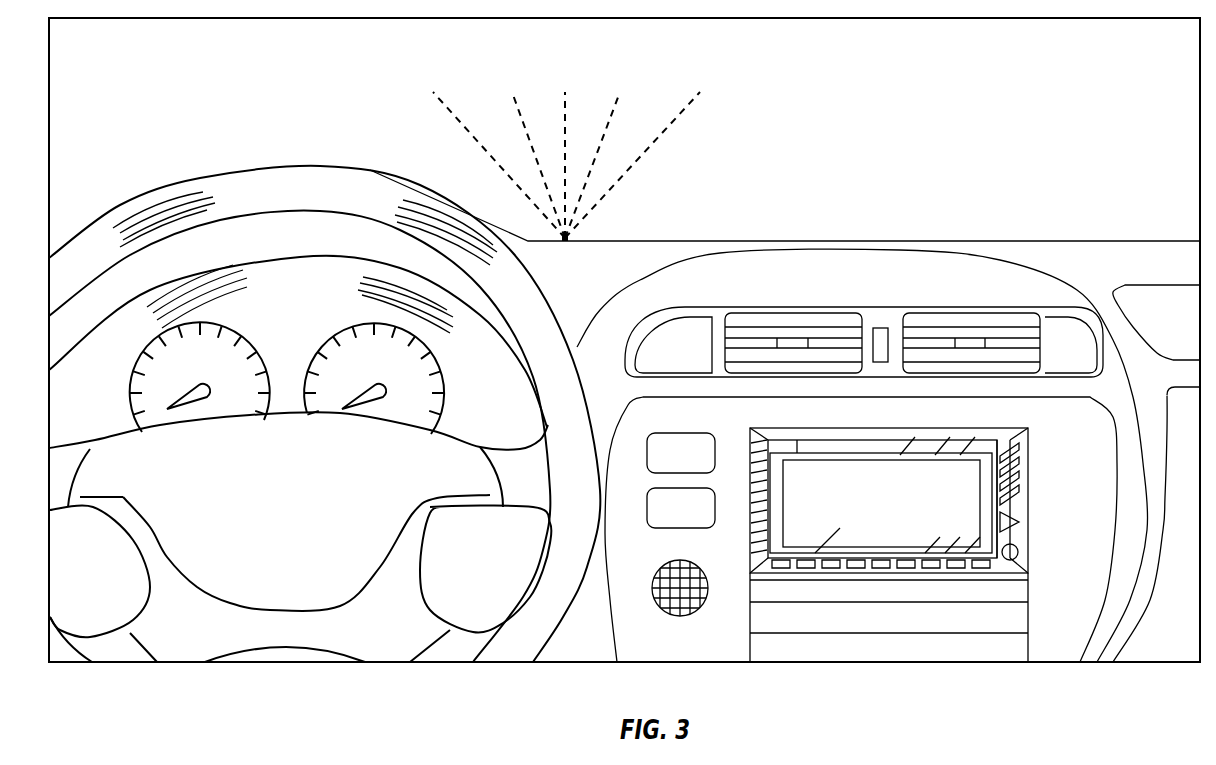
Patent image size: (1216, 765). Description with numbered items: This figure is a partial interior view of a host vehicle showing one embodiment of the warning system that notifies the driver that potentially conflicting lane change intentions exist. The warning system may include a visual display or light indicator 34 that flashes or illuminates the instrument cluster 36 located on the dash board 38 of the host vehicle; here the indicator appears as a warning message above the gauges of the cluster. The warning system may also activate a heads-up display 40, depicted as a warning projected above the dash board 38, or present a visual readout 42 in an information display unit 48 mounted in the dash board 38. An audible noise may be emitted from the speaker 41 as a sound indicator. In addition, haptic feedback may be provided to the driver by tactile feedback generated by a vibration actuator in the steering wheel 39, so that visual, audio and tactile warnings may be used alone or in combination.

The visual display or light indicator 34 is at (285, 293).
The instrument cluster 36 is at (500, 423).
The dash board 38 is at (660, 250).
The steering wheel 39 is at (305, 212).
The heads-up display 40 is at (705, 85).
The speaker 41 is at (678, 618).
The visual readout 42 is at (933, 483).
The information display unit 48 is at (780, 447).